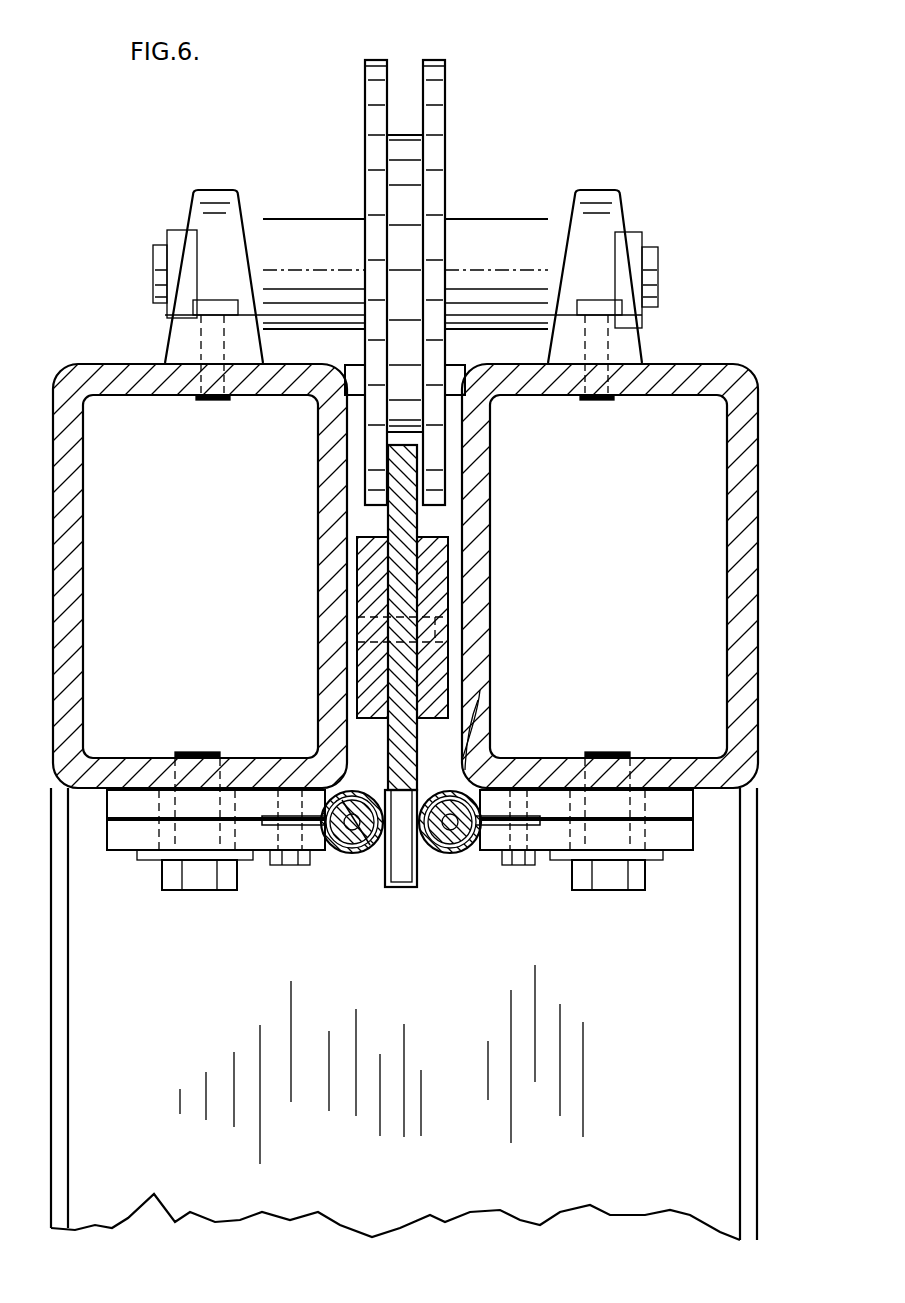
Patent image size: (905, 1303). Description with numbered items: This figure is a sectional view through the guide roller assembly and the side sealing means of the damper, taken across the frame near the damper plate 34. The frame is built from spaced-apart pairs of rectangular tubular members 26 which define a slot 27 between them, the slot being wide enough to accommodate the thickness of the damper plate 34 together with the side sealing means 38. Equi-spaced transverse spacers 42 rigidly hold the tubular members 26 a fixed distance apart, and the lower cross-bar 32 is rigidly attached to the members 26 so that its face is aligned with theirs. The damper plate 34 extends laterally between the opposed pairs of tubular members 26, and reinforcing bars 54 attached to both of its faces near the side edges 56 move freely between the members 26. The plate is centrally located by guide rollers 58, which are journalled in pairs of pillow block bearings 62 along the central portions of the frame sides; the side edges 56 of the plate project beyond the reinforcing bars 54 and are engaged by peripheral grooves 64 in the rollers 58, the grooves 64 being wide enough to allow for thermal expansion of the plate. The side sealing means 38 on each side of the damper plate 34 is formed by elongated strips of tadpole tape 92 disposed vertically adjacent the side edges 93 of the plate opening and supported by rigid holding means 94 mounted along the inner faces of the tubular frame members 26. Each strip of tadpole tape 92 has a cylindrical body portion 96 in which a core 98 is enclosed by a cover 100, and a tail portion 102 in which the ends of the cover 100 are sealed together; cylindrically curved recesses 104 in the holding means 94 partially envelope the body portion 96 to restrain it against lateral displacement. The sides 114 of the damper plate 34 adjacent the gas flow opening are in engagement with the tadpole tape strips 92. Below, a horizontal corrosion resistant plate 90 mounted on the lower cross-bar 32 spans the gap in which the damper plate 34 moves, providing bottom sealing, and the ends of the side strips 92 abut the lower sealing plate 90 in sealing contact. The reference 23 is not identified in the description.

The clamping assembly 23 is at (679, 298).
The rectangular tubular members 26 is at (96, 365).
The slot 27 is at (425, 855).
The lower cross-bar 32 is at (60, 1050).
The damper plate 34 is at (355, 833).
The side sealing means 38 is at (371, 862).
The transverse spacers 42 is at (462, 365).
The reinforcing bars 54 is at (357, 580).
The side edges 56 is at (417, 525).
The guide rollers 58 is at (446, 110).
The pillow block bearings 62 is at (215, 190).
The peripheral grooves 64 is at (410, 93).
The horizontal plate 90 is at (700, 989).
The tadpole tape 92 is at (333, 845).
The side edges of plate opening 93 is at (398, 882).
The holding means 94 is at (118, 855).
The cylindrical body portion 96 is at (356, 852).
The core 98 is at (470, 790).
The cover 100 is at (478, 770).
The tail portion 102 is at (282, 862).
The cylindrically curved recesses 104 is at (348, 800).
The sides of damper plate 114 is at (478, 700).